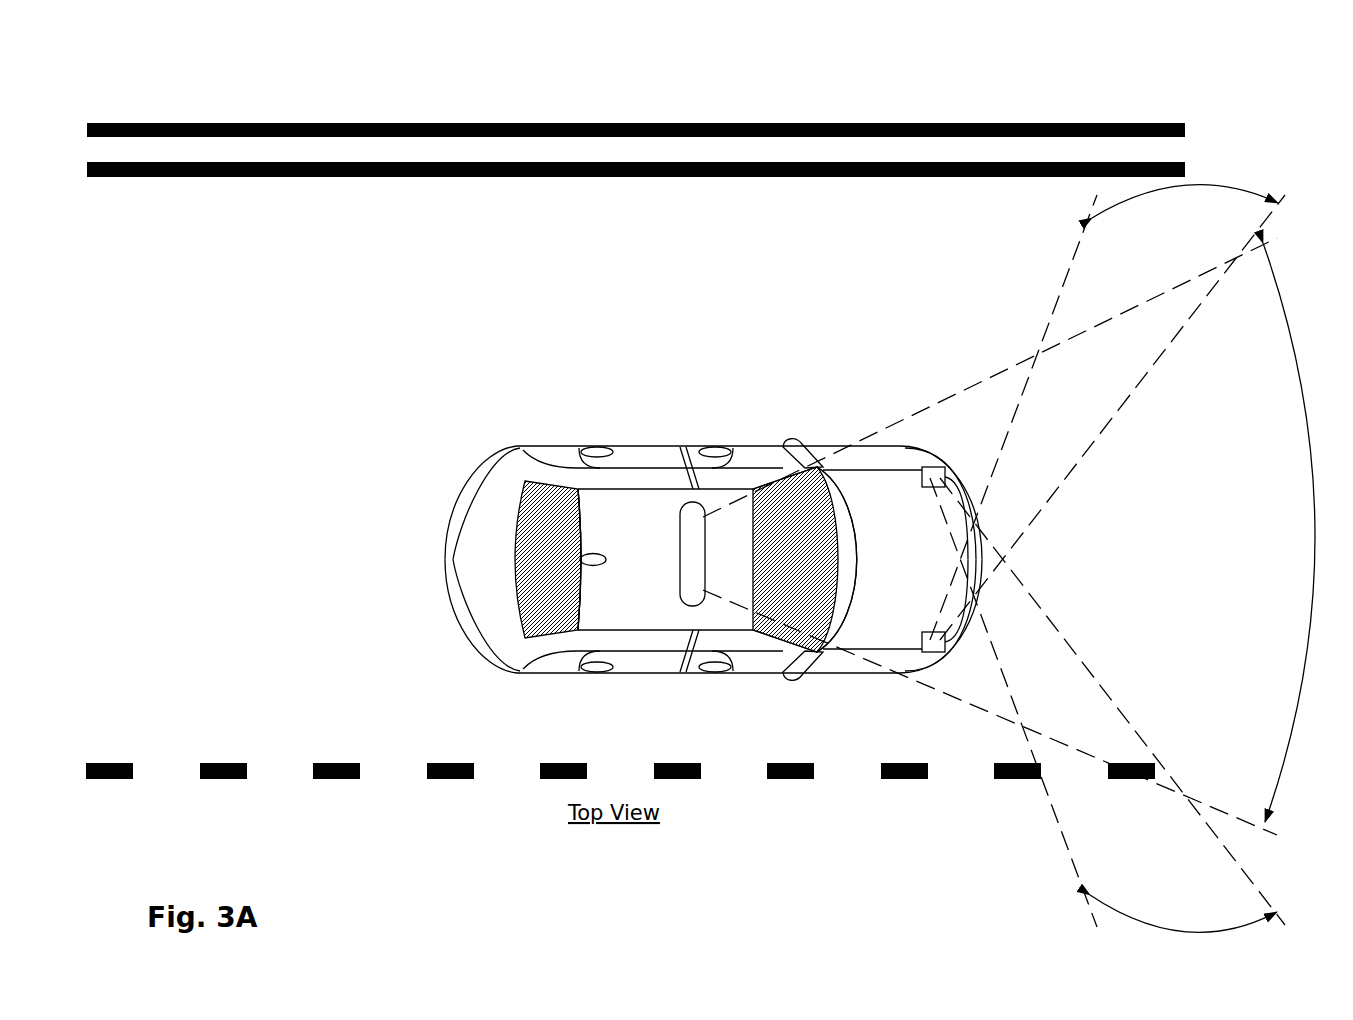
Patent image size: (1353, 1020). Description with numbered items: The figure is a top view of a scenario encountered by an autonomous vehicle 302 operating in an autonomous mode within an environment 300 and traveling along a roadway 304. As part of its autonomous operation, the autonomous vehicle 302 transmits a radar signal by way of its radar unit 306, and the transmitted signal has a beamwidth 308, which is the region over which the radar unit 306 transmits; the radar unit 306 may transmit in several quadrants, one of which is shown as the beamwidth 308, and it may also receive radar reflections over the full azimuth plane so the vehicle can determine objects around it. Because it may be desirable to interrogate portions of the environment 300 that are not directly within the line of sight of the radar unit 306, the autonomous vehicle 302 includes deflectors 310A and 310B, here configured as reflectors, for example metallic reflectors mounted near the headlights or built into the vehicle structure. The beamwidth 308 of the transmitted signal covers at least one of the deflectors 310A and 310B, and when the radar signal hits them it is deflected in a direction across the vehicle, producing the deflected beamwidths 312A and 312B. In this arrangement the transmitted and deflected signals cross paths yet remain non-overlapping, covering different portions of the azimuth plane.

The environment 300 is at (358, 85).
The autonomous vehicle 302 is at (738, 445).
The roadway 304 is at (542, 190).
The radar unit 306 is at (688, 532).
The beamwidth 308 is at (1009, 536).
The deflector 310A is at (955, 466).
The deflector 310B is at (955, 645).
The beamwidth 312A is at (1107, 412).
The beamwidth 312B is at (1107, 705).